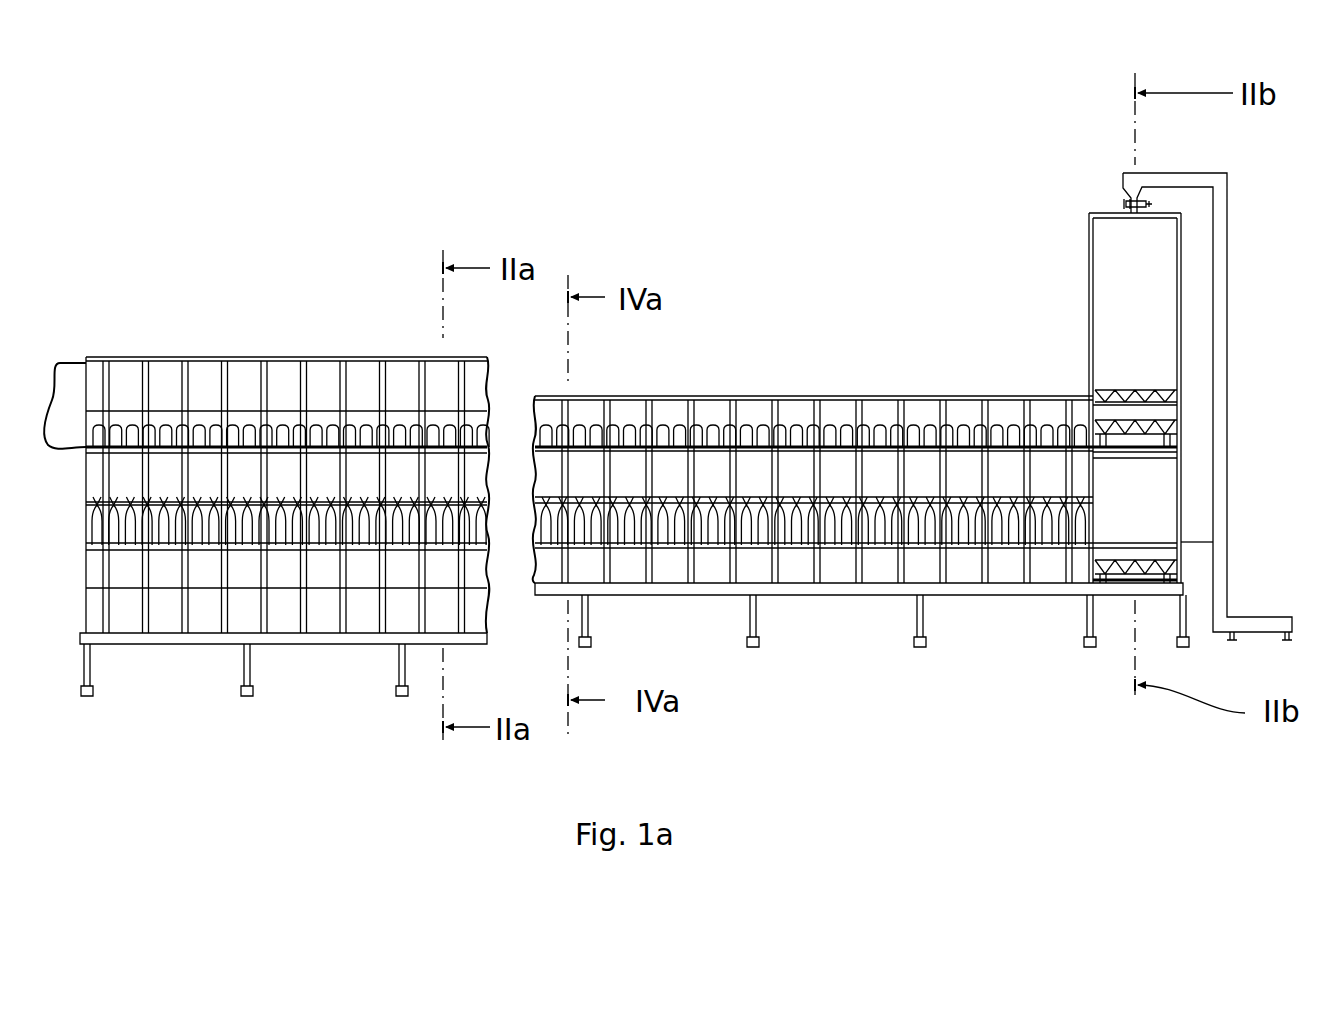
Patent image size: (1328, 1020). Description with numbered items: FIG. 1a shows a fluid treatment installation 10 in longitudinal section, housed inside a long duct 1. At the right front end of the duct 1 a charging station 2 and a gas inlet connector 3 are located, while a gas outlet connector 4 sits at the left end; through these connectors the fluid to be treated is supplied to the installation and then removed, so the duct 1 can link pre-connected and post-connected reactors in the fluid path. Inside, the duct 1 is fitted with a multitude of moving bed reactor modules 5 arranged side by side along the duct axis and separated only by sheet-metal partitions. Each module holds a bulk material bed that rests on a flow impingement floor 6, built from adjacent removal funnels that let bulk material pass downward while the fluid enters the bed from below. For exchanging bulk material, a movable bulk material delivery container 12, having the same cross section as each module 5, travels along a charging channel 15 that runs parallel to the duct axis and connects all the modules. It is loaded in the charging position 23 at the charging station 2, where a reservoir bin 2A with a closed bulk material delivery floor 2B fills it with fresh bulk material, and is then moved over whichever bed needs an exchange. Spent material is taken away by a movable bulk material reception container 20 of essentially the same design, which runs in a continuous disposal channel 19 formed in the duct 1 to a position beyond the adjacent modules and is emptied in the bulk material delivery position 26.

The duct 1 is at (713, 392).
The charging station 2 is at (1105, 193).
The reservoir bin 2A is at (1182, 268).
The bulk material delivery floor 2B is at (1150, 400).
The gas inlet connector 3 is at (1262, 577).
The gas outlet connector 4 is at (65, 360).
The moving bed reactor modules 5 is at (328, 372).
The flow impingement floor 6 is at (95, 503).
The fluid treatment installation 10 is at (482, 222).
The bulk material delivery container 12 is at (1127, 375).
The charging channel 15 is at (996, 400).
The disposal channel 19 is at (960, 565).
The bulk material reception container 20 is at (1119, 714).
The charging position 23 is at (1190, 432).
The bulk material delivery position 26 is at (1180, 568).